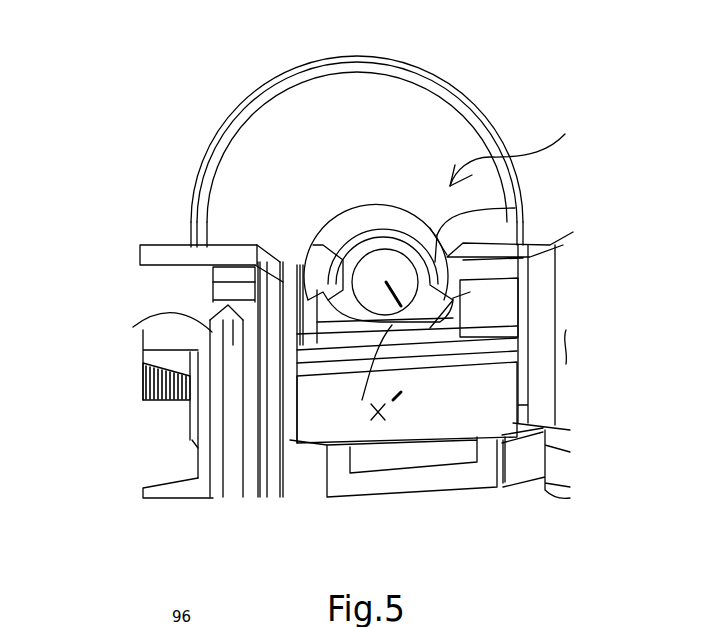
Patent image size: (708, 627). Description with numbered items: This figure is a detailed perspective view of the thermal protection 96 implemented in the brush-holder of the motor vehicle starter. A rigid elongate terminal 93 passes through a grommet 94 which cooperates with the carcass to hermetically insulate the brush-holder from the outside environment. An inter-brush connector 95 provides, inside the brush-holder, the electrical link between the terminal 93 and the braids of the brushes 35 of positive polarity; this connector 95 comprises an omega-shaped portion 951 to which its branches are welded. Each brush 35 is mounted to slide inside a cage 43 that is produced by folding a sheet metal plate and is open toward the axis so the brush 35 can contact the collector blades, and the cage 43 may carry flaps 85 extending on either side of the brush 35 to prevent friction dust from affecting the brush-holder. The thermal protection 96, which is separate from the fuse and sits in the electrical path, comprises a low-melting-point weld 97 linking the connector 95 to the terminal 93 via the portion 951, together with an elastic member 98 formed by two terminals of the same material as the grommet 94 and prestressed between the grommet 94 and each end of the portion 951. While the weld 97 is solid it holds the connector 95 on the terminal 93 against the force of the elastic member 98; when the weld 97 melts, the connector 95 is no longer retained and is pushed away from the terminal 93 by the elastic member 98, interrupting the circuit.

The grommet 94 is at (277, 138).
The terminal 93 is at (387, 266).
The inter-brush connector 95 is at (513, 186).
The omega-shaped portion 951 is at (522, 208).
The low-melting-point weld 97 is at (556, 250).
The elastic member 98 is at (505, 312).
The thermal protection 96 is at (323, 245).
The cage 43 is at (145, 258).
The brush 35 is at (213, 273).
The flap 85 is at (210, 328).